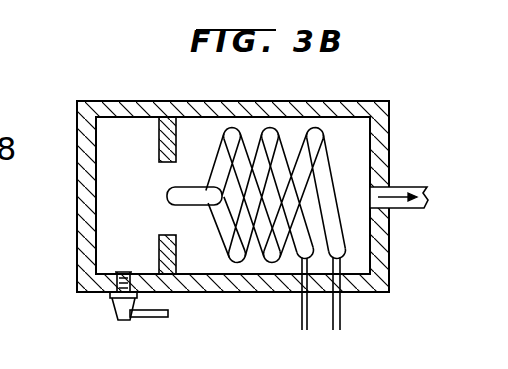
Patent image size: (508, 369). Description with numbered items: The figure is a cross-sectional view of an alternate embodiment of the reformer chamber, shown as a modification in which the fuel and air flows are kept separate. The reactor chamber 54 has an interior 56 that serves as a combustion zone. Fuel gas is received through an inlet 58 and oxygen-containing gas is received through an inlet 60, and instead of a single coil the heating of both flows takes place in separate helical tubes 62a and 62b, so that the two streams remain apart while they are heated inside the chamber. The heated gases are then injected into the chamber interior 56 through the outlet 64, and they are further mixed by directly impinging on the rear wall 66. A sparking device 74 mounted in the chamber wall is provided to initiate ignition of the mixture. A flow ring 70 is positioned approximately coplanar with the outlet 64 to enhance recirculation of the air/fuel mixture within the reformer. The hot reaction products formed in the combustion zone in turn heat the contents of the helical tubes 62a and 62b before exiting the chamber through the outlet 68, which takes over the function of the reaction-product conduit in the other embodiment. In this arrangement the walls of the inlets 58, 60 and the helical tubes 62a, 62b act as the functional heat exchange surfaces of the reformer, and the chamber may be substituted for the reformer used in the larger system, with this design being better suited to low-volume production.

The reactor chamber 54 is at (198, 107).
The interior 56 is at (125, 122).
The inlet 58 is at (298, 311).
The inlet 60 is at (341, 306).
The helical tube 62a is at (239, 141).
The helical tube 62b is at (319, 141).
The outlet 64 is at (167, 201).
The rear wall 66 is at (97, 243).
The outlet 68 is at (418, 187).
The flow ring 70 is at (183, 277).
The sparking device 74 is at (121, 321).